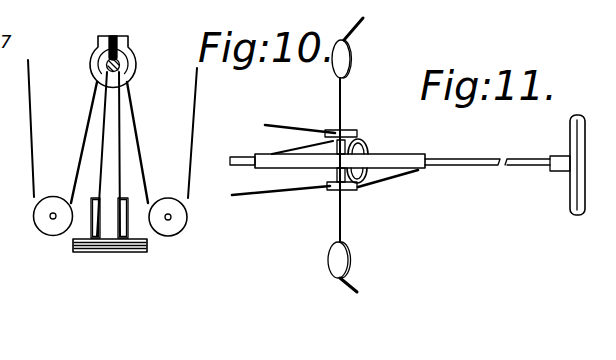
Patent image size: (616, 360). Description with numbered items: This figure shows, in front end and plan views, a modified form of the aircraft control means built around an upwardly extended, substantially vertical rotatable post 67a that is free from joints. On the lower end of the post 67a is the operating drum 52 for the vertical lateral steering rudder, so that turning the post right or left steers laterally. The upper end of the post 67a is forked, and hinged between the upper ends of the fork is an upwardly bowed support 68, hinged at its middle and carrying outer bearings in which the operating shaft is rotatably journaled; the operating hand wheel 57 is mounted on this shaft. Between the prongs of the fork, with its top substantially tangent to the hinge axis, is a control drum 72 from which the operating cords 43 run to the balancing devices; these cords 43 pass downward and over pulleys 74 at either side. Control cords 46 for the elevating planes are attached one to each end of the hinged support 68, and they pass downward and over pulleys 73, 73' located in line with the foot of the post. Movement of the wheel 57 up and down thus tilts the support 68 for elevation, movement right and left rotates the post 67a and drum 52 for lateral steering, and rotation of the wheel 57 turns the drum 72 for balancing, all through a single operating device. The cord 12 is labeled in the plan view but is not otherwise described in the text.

In FIG. 11, the cord 12 is at (333, 146).
In FIG. 10, the operating cords 43 is at (84, 150).
In FIG. 10, the control cords 46 is at (129, 228).
In FIG. 10, the operating drum 52 is at (109, 252).
In FIG. 11, the hand wheel 57 is at (575, 142).
In FIG. 10, the rotatable post 67a is at (114, 137).
In FIG. 10, the upwardly bowed support 68 is at (116, 38).
In FIG. 11, the upwardly bowed support 68 is at (378, 160).
In FIG. 10, the control drum 72 is at (124, 70).
In FIG. 10, the pulley 73 is at (60, 159).
In FIG. 10, the pulley 73' is at (203, 159).
In FIG. 10, the pulley 74 is at (50, 197).